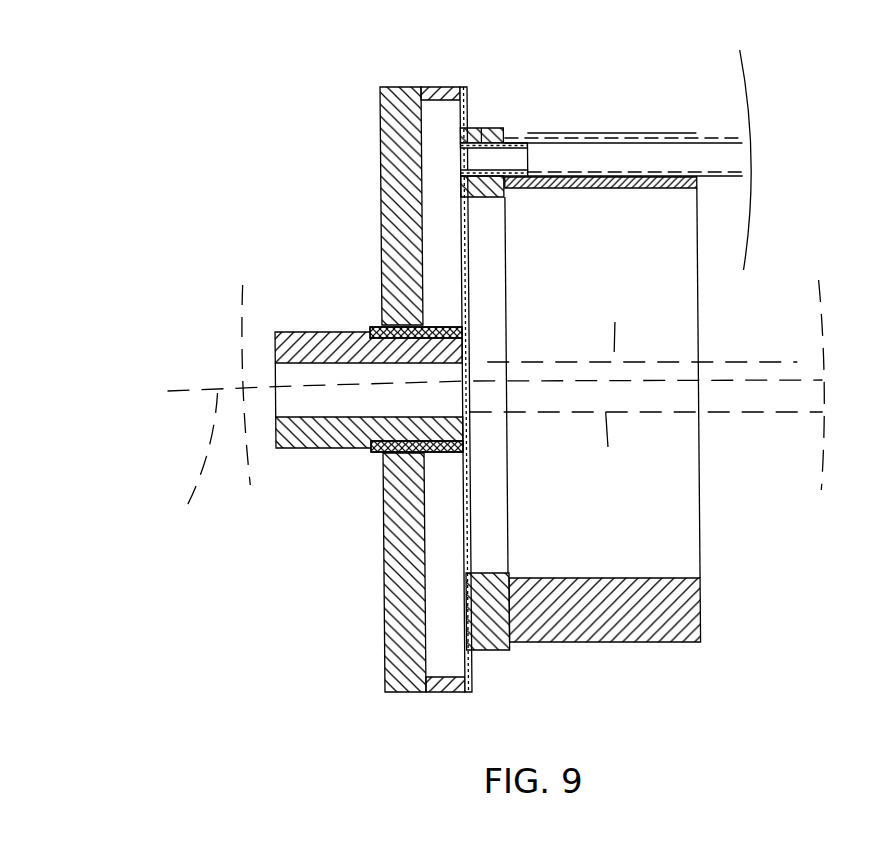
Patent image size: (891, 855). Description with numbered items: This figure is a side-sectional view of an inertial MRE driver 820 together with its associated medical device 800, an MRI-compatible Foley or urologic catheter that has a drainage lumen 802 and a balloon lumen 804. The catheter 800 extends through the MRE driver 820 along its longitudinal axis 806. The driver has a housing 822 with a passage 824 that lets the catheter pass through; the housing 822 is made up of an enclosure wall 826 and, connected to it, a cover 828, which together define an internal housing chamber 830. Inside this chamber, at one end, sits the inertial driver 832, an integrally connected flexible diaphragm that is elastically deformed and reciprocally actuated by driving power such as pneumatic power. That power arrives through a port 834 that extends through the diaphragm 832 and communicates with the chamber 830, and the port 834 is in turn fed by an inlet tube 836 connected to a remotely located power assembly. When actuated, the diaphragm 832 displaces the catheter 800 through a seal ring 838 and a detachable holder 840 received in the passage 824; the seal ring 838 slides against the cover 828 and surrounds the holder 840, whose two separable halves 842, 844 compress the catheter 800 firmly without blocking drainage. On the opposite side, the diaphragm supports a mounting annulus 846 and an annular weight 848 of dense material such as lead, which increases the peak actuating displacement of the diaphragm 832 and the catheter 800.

The medical device 800 is at (721, 440).
The drainage lumen 802 is at (608, 462).
The balloon lumen 804 is at (618, 310).
The longitudinal axis 806 is at (178, 512).
The inertial MRE driver 820 is at (298, 110).
The housing 822 is at (425, 86).
The passage 824 is at (487, 343).
The enclosure wall 826 is at (445, 86).
The cover 828 is at (381, 163).
The internal housing chamber 830 is at (433, 257).
The inertial driver 832 is at (467, 263).
The port 834 is at (490, 128).
The inlet tube 836 is at (602, 133).
The seal ring 838 is at (468, 448).
The detachable holder 840 is at (292, 448).
The separable half 842 is at (345, 331).
The separable half 844 is at (363, 452).
The mounting annulus 846 is at (488, 650).
The annular weight 848 is at (627, 643).